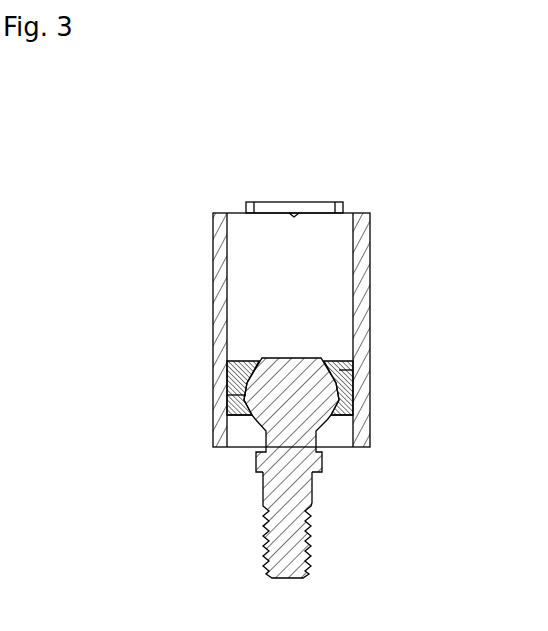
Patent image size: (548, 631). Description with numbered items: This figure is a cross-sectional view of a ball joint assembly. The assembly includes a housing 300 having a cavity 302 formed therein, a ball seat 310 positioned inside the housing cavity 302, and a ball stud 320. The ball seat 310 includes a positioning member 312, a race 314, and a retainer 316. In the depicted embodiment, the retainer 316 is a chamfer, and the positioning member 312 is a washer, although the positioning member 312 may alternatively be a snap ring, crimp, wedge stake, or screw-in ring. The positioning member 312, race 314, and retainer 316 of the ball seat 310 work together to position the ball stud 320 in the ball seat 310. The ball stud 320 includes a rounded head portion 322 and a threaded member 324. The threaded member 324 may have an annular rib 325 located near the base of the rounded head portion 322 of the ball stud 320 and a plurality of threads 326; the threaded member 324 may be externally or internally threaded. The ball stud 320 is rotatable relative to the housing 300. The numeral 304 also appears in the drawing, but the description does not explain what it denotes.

The housing 300 is at (303, 399).
The cavity 302 is at (238, 247).
The contact plug 304 is at (328, 479).
The ball seat 310 is at (371, 369).
The positioning member 312 is at (342, 361).
The race 314 is at (352, 372).
The retainer 316 is at (233, 405).
The ball stud 320 is at (290, 388).
The rounded head portion 322 is at (236, 364).
The threaded member 324 is at (322, 499).
The annular rib 325 is at (321, 460).
The threads 326 is at (308, 562).